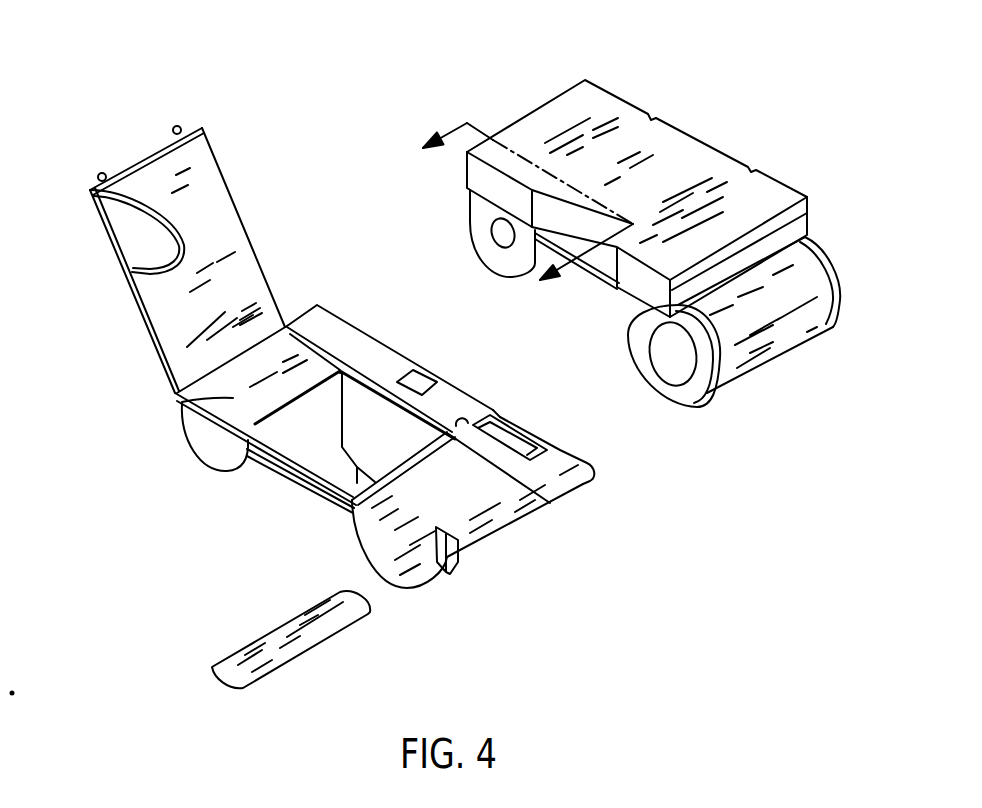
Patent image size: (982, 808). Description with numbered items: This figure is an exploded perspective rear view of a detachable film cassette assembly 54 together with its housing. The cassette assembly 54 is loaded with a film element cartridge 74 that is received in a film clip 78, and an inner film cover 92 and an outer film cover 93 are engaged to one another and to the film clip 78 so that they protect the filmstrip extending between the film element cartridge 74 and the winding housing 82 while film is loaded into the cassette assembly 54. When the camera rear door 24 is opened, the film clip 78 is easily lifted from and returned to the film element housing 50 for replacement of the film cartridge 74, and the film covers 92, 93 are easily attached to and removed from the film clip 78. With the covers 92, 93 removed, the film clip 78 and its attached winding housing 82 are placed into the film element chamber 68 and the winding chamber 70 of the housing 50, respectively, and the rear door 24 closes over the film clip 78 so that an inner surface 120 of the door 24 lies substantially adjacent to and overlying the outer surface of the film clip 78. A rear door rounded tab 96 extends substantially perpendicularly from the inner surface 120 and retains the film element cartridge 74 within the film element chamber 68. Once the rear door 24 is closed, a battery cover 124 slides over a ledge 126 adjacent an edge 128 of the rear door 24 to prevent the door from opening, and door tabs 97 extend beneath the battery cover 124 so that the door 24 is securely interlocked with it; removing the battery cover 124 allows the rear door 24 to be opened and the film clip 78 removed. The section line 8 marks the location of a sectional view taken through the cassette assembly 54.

The section line 8- 8 is at (517, 216).
The camera rear door 24 is at (213, 182).
The film element housing 50 is at (310, 480).
The detachable cassette assembly 54 is at (752, 190).
The film element chamber 68 is at (437, 490).
The winding chamber 70 is at (183, 400).
The film element cartridge 74 is at (678, 398).
The film clip 78 is at (793, 340).
The winding housing 82 is at (497, 253).
The inner film cover 92 is at (592, 280).
The outer film cover 93 is at (665, 133).
The rear door rounded tab 96 is at (138, 238).
The door tabs 97 is at (173, 128).
The inner surface 120 is at (173, 323).
The battery cover 124 is at (313, 635).
The ledge 126 is at (547, 497).
The edge 128 is at (200, 128).